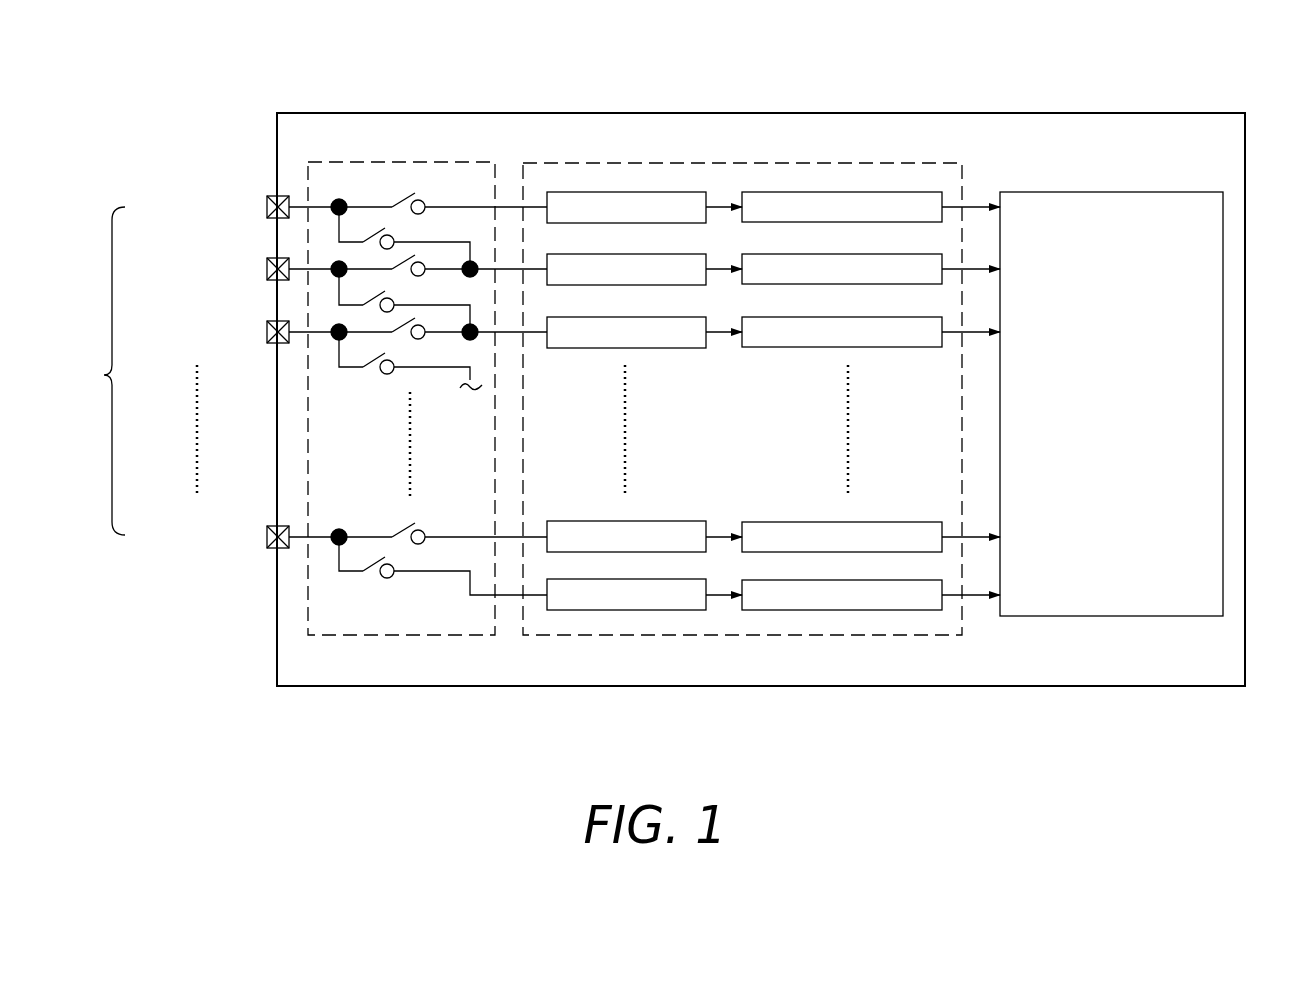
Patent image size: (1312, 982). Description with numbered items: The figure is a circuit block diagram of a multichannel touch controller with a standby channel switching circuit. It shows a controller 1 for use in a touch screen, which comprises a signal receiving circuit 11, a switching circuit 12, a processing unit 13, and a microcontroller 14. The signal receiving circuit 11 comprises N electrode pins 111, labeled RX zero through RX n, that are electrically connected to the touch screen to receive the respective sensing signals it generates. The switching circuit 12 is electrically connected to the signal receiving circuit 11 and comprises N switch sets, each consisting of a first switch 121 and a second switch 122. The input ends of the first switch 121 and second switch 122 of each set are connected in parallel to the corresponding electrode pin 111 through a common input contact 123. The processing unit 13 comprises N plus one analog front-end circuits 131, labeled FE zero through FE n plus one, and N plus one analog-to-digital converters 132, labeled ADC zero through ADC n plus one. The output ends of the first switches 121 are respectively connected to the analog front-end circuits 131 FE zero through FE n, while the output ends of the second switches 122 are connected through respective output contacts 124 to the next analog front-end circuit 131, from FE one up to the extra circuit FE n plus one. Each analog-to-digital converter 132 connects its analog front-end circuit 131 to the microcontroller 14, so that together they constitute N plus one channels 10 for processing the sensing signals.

The controller 1 is at (1218, 112).
The channels 10 is at (157, 372).
The signal receiving circuit 11 is at (188, 312).
The electrode pins 111 is at (273, 197).
The switching circuit 12 is at (384, 343).
The first switch 121 is at (410, 196).
The second switch 122 is at (366, 236).
The common input contact 123 is at (332, 203).
The output contact 124 is at (472, 262).
The processing unit 13 is at (742, 343).
The analog front-end circuit 131 is at (690, 203).
The analog-to-digital converter 132 is at (758, 203).
The microcontroller 14 is at (1198, 270).